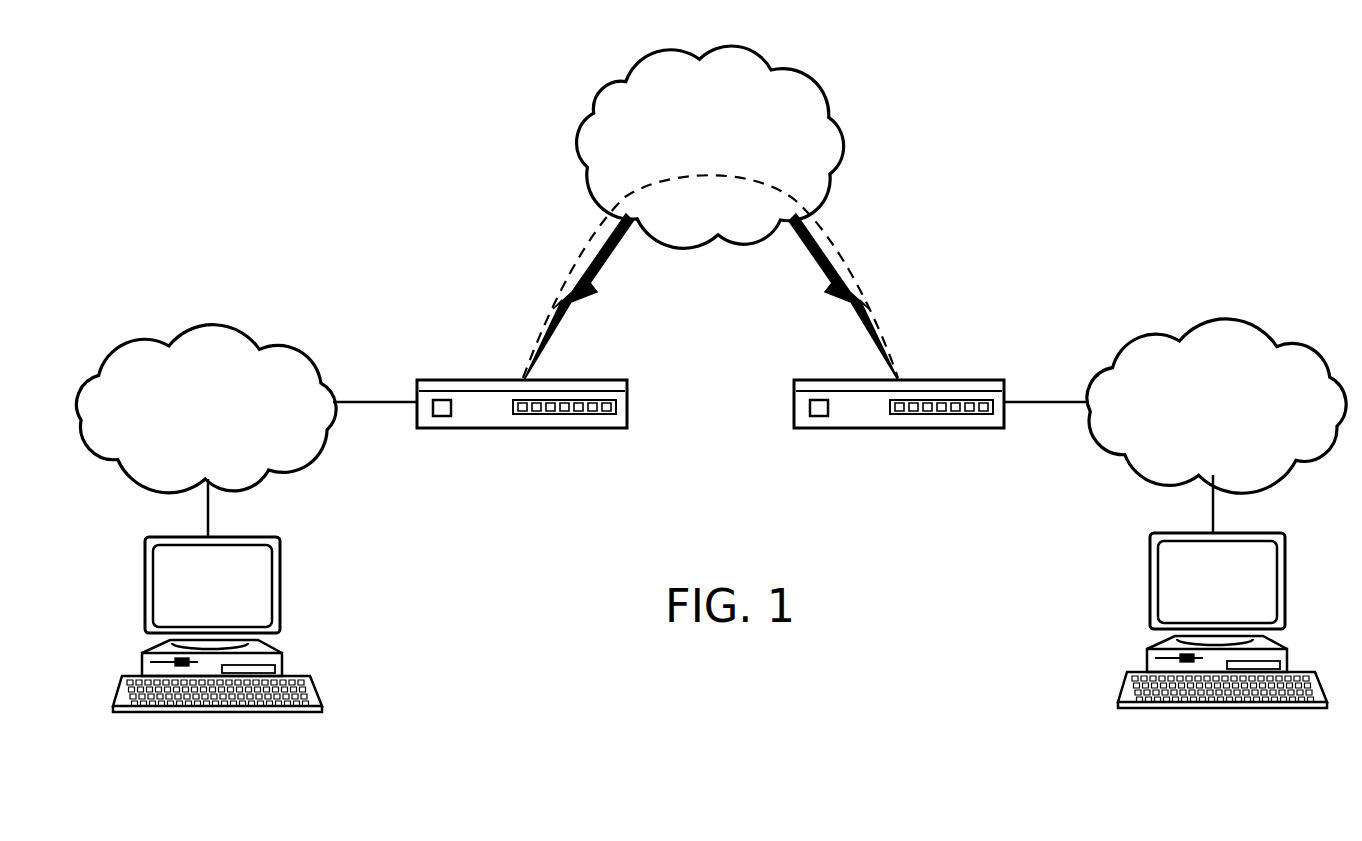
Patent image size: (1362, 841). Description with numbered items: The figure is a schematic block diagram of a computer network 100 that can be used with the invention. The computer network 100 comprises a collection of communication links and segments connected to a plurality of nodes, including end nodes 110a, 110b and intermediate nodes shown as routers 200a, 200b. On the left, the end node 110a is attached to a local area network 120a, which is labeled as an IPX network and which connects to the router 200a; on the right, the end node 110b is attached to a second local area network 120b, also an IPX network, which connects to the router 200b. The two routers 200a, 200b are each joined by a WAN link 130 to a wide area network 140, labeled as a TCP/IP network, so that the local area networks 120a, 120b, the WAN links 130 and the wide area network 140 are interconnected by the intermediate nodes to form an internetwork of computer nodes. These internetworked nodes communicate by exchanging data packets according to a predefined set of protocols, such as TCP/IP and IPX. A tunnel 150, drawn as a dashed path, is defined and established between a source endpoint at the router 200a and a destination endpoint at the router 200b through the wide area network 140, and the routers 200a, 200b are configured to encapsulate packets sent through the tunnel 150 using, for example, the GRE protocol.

The computer network 100 is at (287, 139).
The end node 110a is at (281, 566).
The end node 110b is at (1285, 561).
The local area network 120a is at (286, 343).
The local area network 120b is at (1268, 340).
The WAN link 130 is at (573, 320).
The wide area network 140 is at (792, 69).
The tunnel 150 is at (841, 249).
The router 200a is at (452, 380).
The router 200b is at (901, 374).